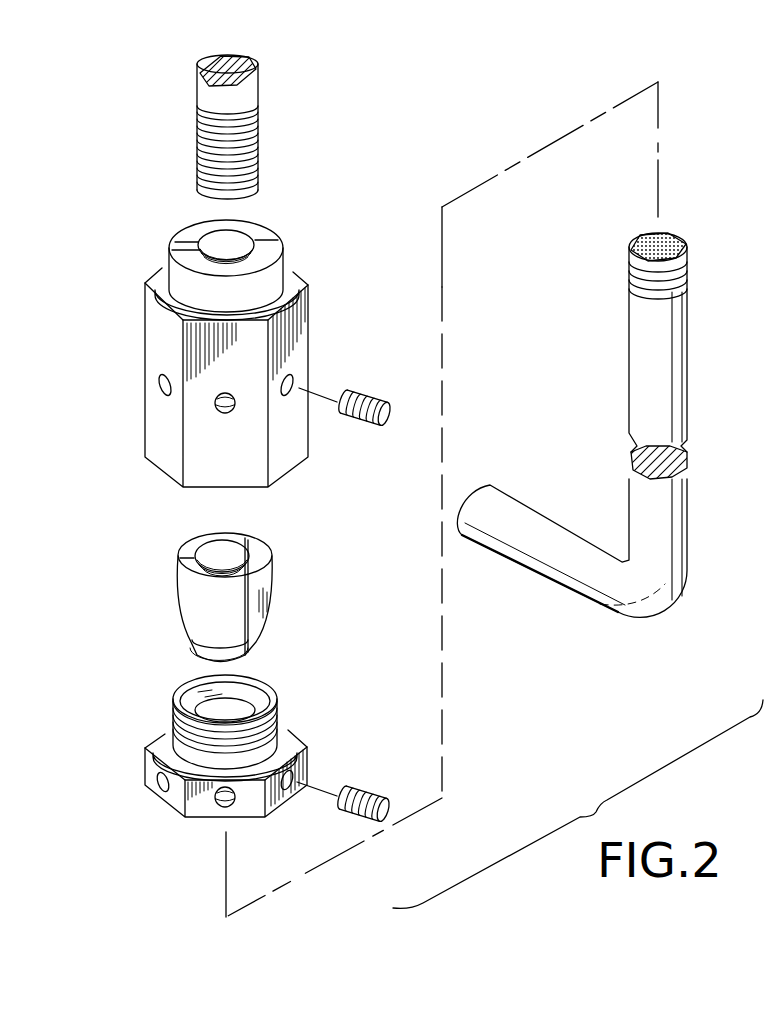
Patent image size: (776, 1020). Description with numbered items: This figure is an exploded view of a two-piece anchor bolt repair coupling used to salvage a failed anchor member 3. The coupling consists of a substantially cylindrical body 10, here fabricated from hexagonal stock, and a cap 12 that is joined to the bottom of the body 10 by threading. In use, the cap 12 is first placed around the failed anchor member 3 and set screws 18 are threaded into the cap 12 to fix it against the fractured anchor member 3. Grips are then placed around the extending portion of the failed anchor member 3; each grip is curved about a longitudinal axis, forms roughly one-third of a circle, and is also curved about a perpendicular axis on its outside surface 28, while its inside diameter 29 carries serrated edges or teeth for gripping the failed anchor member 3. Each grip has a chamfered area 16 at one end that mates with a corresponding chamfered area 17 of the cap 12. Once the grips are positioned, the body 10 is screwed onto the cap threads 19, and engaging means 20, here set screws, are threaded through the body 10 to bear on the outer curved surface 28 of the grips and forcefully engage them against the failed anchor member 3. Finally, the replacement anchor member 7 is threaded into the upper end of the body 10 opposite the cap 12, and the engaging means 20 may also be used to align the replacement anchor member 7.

The failed anchor member 3 is at (673, 240).
The replacement anchor member 7 is at (210, 97).
The body 10 is at (157, 310).
The cap 12 is at (197, 802).
The chamfered area 16 is at (190, 645).
The chamfered area 17 is at (264, 695).
The set screws 18 is at (366, 795).
The cap threads 19 is at (185, 723).
The engaging means 20 is at (370, 400).
The outside surface 28 is at (183, 595).
The inside diameter 29 is at (207, 545).